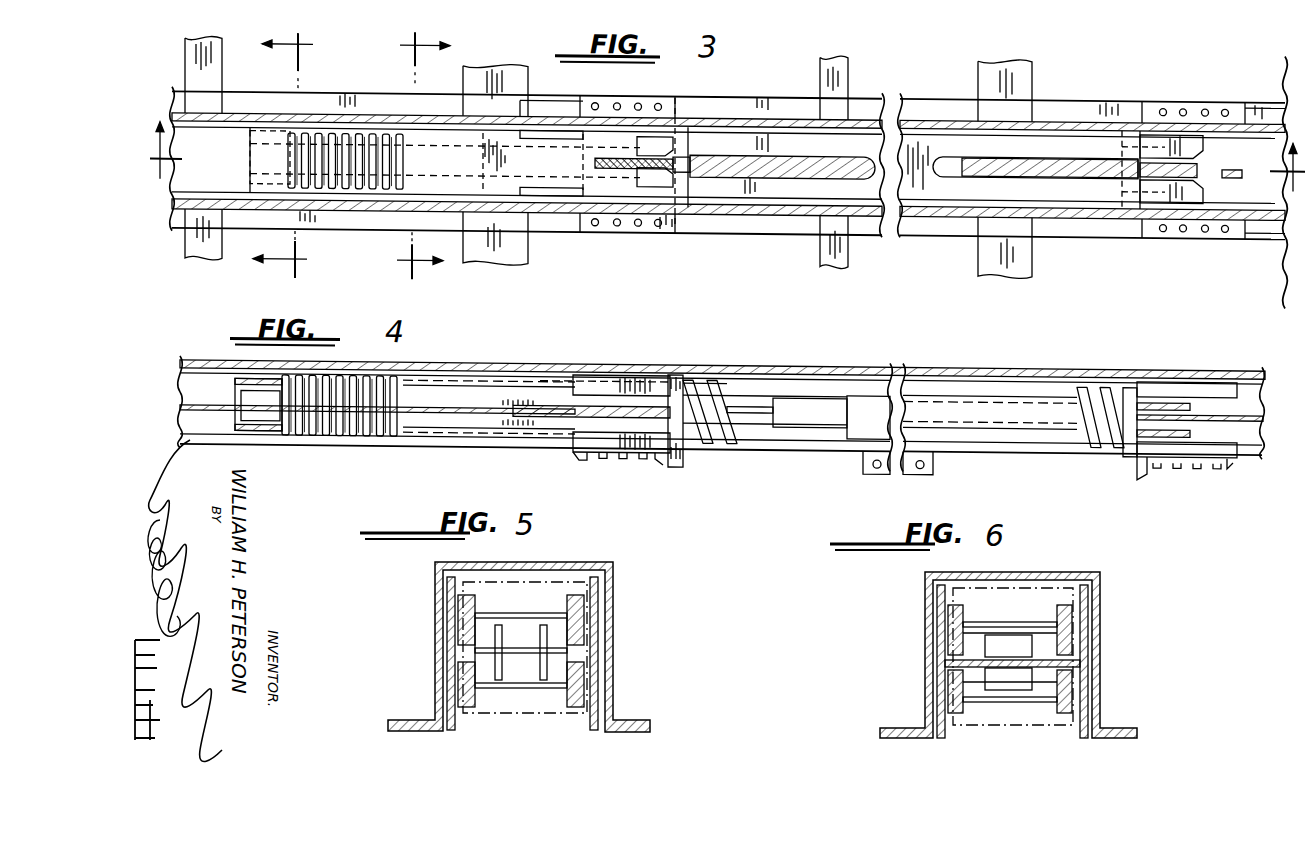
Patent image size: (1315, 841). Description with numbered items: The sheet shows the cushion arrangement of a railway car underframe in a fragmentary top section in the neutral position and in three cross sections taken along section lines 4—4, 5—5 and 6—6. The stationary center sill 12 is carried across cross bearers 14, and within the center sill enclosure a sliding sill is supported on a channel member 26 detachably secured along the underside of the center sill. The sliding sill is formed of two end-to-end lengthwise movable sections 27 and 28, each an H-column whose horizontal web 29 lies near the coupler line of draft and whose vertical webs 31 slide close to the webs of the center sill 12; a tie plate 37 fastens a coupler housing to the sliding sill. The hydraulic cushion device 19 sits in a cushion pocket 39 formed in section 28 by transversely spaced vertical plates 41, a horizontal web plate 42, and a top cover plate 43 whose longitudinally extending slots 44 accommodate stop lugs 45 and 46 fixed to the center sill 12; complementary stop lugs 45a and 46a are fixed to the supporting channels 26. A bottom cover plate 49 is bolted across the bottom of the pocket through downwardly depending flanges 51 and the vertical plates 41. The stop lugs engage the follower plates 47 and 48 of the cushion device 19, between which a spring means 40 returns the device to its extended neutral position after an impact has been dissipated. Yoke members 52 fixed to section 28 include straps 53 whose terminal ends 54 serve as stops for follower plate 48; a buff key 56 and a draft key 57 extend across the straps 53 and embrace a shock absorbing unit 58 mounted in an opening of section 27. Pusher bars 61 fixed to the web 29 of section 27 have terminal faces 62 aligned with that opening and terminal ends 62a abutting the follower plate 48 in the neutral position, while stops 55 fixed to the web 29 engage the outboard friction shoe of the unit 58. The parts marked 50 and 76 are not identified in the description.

In FIG. 3, the section line 4— 4 is at (723, 157).
In FIG. 3, the section line 5— 5 is at (288, 150).
In FIG. 3, the section line 6— 6 is at (421, 153).
In FIG. 4, the center sill 12 is at (1232, 360).
In FIG. 5, the center sill 12 is at (578, 568).
In FIG. 6, the center sill 12 is at (1092, 572).
In FIG. 3, the cross bearers 14 is at (205, 46).
In FIG. 3, the hydraulic cushion device 19 is at (968, 168).
In FIG. 4, the channel member 26 is at (1144, 464).
In FIG. 3, the sliding sill section 27 is at (383, 110).
In FIG. 4, the sliding sill section 27 is at (378, 444).
In FIG. 5, the sliding sill section 27 is at (598, 594).
In FIG. 6, the sliding sill section 27 is at (1090, 624).
In FIG. 3, the sliding sill section 28 is at (766, 110).
In FIG. 4, the sliding sill section 28 is at (855, 444).
In FIG. 3, the horizontal web 29 is at (1268, 195).
In FIG. 4, the horizontal web 29 is at (236, 436).
In FIG. 3, the vertical webs 31 is at (1222, 208).
In FIG. 3, the tie plate 37 is at (1176, 124).
In FIG. 4, the cushion pocket 39 is at (760, 425).
In FIG. 3, the spring means 40 is at (682, 165).
In FIG. 4, the spring means 40 is at (725, 397).
In FIG. 3, the vertical plates 41 is at (860, 123).
In FIG. 4, the horizontal web plate 42 is at (674, 412).
In FIG. 3, the top cover plate 43 is at (930, 138).
In FIG. 4, the top cover plate 43 is at (874, 386).
In FIG. 3, the longitudinally extending slots 44 is at (720, 172).
In FIG. 4, the longitudinally extending slots 44 is at (812, 434).
In FIG. 3, the stop lug 45 is at (1196, 158).
In FIG. 4, the stop lug 45 is at (1172, 370).
In FIG. 4, the stop lug 45a is at (1230, 446).
In FIG. 3, the stop lug 46 is at (620, 168).
In FIG. 4, the stop lug 46 is at (622, 368).
In FIG. 4, the stop lug 46a is at (598, 448).
In FIG. 4, the follower plate 47 is at (1128, 430).
In FIG. 3, the follower plate 48 is at (682, 150).
In FIG. 4, the bottom cover plate 49 is at (938, 444).
In FIG. 4, the guide rod 50 is at (243, 397).
In FIG. 5, the guide rod 50 is at (503, 642).
In FIG. 4, the downwardly depending flanges 51 is at (876, 462).
In FIG. 3, the yoke members 52 is at (362, 187).
In FIG. 4, the yoke members 52 is at (539, 369).
In FIG. 5, the yoke members 52 is at (564, 616).
In FIG. 6, the yoke members 52 is at (984, 610).
In FIG. 3, the straps 53 is at (552, 125).
In FIG. 4, the straps 53 is at (660, 376).
In FIG. 5, the straps 53 is at (458, 620).
In FIG. 6, the straps 53 is at (948, 628).
In FIG. 4, the terminal ends 54 is at (700, 378).
In FIG. 4, the stops 55 is at (1191, 394).
In FIG. 3, the buff key 56 is at (436, 140).
In FIG. 4, the buff key 56 is at (546, 374).
In FIG. 6, the buff key 56 is at (1036, 620).
In FIG. 3, the draft key 57 is at (258, 150).
In FIG. 4, the draft key 57 is at (262, 380).
In FIG. 5, the draft key 57 is at (505, 612).
In FIG. 4, the shock absorbing unit 58 is at (374, 376).
In FIG. 5, the shock absorbing unit 58 is at (522, 578).
In FIG. 6, the shock absorbing unit 58 is at (1008, 586).
In FIG. 4, the pusher bars 61 is at (455, 390).
In FIG. 6, the pusher bars 61 is at (1030, 646).
In FIG. 6, the terminal faces 62 is at (1012, 636).
In FIG. 4, the terminal ends 62a is at (688, 420).
In FIG. 4, the sleeve 76 is at (568, 414).